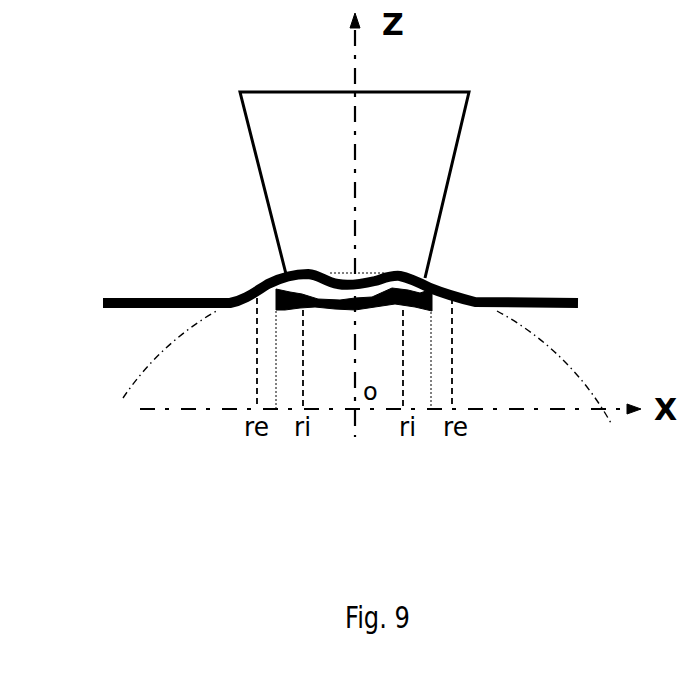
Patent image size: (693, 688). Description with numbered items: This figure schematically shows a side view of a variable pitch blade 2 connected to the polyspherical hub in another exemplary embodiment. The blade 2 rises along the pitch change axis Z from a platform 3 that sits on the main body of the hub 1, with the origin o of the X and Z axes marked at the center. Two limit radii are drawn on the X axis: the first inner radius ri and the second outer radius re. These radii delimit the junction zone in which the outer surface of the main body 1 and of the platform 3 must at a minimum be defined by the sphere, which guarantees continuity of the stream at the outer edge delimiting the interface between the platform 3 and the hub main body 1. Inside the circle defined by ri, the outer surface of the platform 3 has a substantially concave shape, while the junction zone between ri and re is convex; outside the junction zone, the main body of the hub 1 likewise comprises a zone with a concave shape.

The main body of the hub 1 is at (530, 362).
The trapezoidal body (tool / polishing head) 2 is at (378, 122).
The platform 3 is at (422, 275).